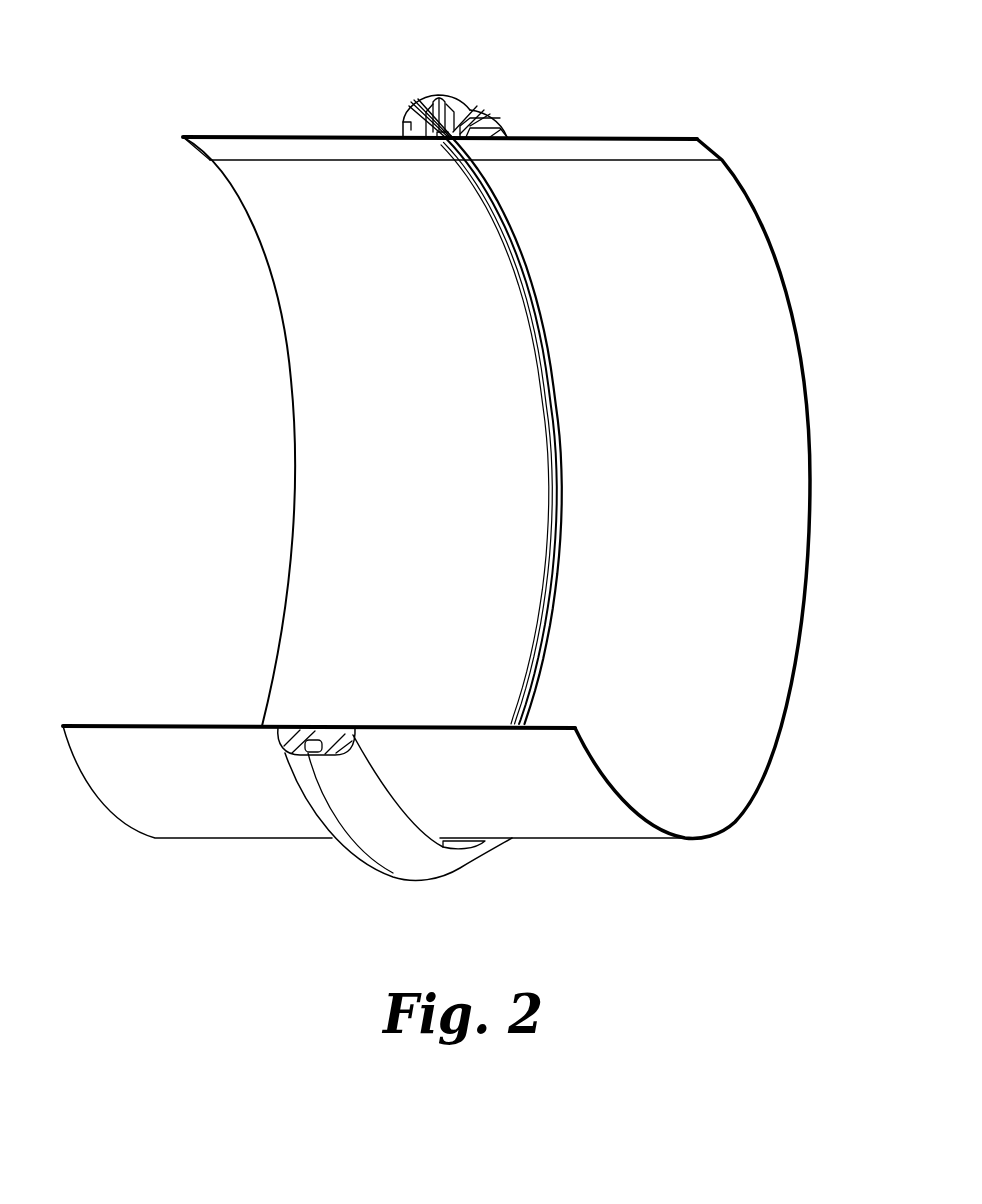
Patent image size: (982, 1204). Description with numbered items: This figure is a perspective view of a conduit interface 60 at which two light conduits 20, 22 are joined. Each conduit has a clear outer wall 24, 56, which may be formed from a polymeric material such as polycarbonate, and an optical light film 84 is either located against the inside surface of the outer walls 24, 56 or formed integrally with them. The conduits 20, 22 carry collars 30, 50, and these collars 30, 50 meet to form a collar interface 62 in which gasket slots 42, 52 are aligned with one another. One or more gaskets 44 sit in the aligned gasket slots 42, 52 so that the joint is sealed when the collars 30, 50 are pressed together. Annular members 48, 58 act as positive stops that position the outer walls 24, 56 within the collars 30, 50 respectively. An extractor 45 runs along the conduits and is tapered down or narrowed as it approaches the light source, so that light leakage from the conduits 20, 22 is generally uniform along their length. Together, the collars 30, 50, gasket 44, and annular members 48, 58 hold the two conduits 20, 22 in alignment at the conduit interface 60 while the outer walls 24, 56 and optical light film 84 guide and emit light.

The light conduit 20 is at (218, 808).
The light conduit 22 is at (573, 820).
The outer wall 24 is at (290, 364).
The collar 30 is at (410, 113).
The gasket slot 42 is at (438, 98).
The gasket 44 is at (428, 110).
The extractor 45 is at (235, 148).
The annular member 48 is at (541, 389).
The collar 50 is at (473, 115).
The gasket slot 52 is at (453, 101).
The outer wall 56 is at (795, 300).
The annular member 58 is at (563, 402).
The conduit interface 60 is at (432, 876).
The collar interface 62 is at (353, 842).
The optical light film 84 is at (376, 523).